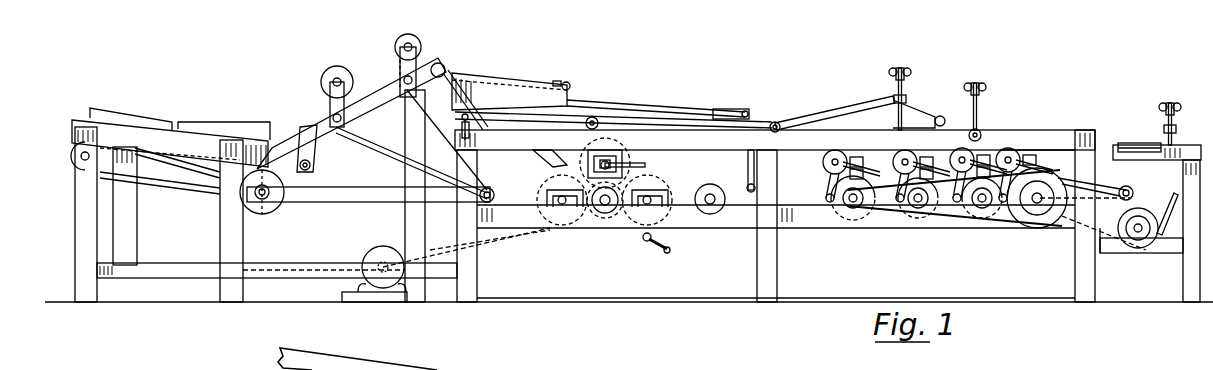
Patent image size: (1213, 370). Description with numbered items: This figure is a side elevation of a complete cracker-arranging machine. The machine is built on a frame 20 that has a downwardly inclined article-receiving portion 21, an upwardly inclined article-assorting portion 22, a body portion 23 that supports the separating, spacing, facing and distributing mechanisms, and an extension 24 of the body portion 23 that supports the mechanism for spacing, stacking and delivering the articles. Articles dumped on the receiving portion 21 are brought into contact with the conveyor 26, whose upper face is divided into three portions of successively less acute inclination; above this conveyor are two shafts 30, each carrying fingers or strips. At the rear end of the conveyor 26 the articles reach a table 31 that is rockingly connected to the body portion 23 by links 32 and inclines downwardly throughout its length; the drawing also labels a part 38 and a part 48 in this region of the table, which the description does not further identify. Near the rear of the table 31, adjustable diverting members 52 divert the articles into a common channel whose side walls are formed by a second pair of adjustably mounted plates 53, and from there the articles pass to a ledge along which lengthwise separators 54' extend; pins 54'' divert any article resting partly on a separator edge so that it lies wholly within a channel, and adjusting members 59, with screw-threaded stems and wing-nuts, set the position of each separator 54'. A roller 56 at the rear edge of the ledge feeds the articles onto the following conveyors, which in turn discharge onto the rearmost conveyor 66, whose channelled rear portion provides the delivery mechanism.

The frame 20 is at (233, 257).
The article-receiving portion 21 is at (135, 137).
The article-assorting portion 22 is at (393, 92).
The body portion 23 is at (673, 138).
The extension 24 is at (1016, 138).
The conveyor 26 is at (335, 147).
The shaft 30 is at (337, 80).
The table 31 is at (608, 115).
The link 32 is at (470, 122).
The plate 38 is at (590, 110).
The knob 48 is at (566, 82).
The adjustable diverting member 52 is at (665, 108).
The adjustably mounted plate 53 is at (737, 112).
The separator 54' is at (860, 97).
The pin 54'' is at (727, 82).
The roller 56 is at (776, 122).
The adjusting member 59 is at (970, 113).
The conveyor 66 is at (1122, 145).